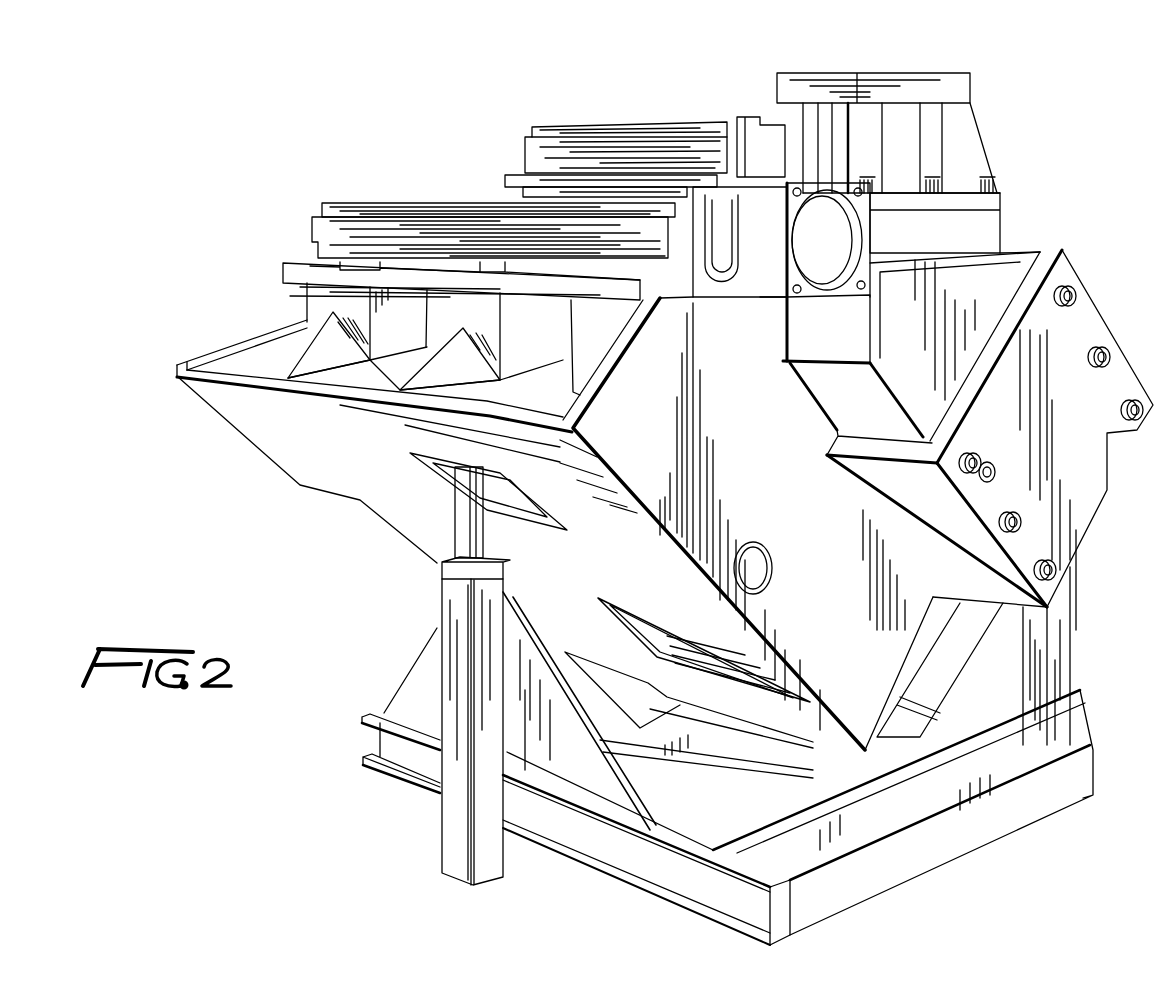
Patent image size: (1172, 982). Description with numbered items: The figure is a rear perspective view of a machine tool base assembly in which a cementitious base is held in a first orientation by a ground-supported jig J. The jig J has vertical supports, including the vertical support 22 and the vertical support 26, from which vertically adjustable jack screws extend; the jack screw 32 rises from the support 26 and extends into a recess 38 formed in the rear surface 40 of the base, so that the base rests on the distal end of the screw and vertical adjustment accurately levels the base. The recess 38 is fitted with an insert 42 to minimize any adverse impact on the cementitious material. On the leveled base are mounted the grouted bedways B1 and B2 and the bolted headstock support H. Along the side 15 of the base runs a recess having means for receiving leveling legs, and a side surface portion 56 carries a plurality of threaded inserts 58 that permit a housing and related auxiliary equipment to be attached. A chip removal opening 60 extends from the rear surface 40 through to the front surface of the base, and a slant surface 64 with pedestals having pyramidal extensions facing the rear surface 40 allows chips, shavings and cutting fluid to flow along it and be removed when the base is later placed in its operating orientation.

The side 15 is at (757, 447).
The vertical support 22 is at (1063, 705).
The vertical support 26 is at (500, 858).
The jack screw 32 is at (468, 537).
The recess 38 is at (510, 497).
The rear surface 40 is at (362, 464).
The insert 42 is at (565, 530).
The side surface portion 56 is at (1080, 406).
The threaded inserts 58 is at (1077, 292).
The chip removal opening 60 is at (637, 616).
The slant surface 64 is at (283, 370).
The bedway B1 is at (530, 120).
The bedway B2 is at (275, 200).
The headstock support H is at (1000, 82).
The jig J is at (754, 771).